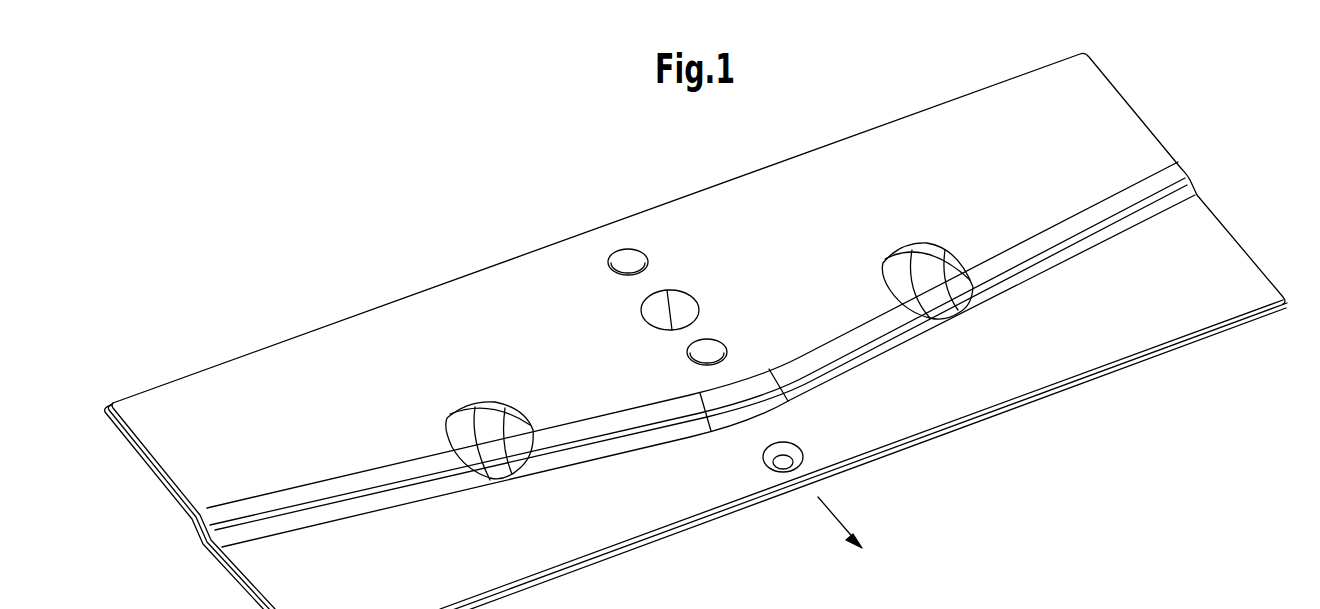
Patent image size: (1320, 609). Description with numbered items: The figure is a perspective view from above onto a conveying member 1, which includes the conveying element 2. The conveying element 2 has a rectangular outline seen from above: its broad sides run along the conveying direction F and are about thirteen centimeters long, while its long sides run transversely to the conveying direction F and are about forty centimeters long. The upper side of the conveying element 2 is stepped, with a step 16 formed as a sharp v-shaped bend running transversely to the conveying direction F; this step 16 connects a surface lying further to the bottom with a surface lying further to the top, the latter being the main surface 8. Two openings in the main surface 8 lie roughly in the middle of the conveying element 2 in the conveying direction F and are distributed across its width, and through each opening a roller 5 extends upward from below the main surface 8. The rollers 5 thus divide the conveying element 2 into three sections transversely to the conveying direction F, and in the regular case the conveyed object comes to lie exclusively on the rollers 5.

The conveying member 1 is at (353, 183).
The conveying element 2 is at (1200, 230).
The roller 5 is at (483, 418).
The main surface 8 is at (758, 259).
The step 16 is at (1192, 173).
The conveying direction F is at (834, 517).